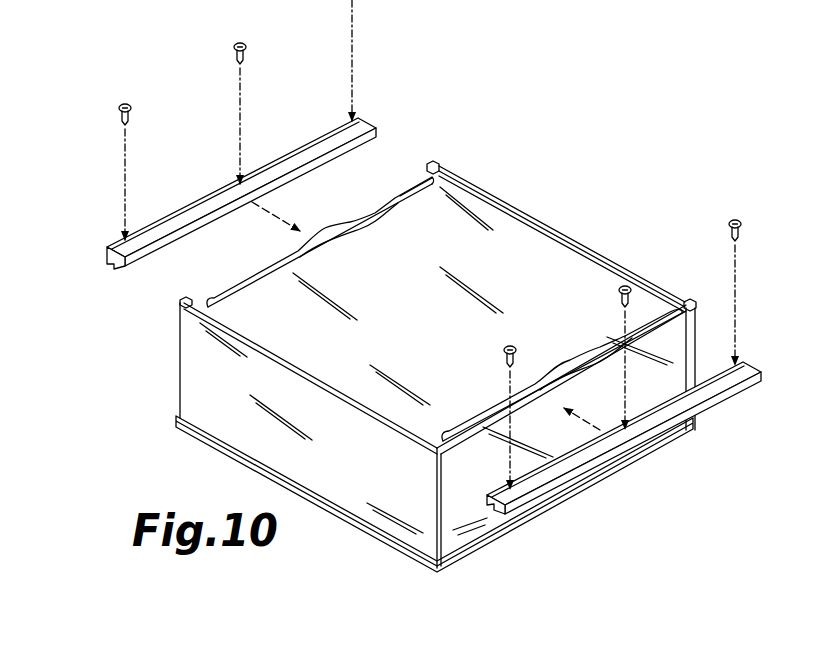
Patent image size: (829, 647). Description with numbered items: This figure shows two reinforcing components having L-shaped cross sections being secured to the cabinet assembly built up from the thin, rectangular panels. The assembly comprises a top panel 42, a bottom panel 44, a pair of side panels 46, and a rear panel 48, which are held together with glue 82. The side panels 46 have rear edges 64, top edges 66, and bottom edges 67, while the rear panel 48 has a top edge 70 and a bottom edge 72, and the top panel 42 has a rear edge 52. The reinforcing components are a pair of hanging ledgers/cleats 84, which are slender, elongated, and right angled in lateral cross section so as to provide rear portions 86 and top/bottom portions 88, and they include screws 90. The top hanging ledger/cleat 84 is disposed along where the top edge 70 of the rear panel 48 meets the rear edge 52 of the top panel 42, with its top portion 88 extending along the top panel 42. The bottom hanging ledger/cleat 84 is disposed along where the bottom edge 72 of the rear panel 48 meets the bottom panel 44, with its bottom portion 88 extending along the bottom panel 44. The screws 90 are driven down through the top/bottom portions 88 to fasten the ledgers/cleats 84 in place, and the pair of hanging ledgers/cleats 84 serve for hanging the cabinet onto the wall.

The top panel 42 is at (395, 186).
The bottom panel 44 is at (465, 477).
The side panels 46 is at (500, 189).
The rear panel 48 is at (558, 267).
The rear edge 52 is at (276, 259).
The rear edges 64 is at (283, 363).
The top edges 66 is at (428, 163).
The bottom edges 67 is at (497, 600).
The top edge 70 is at (326, 228).
The bottom edge 72 is at (605, 375).
The glue 82 is at (373, 226).
The hanging ledgers/cleats 84 is at (293, 150).
The rear portions 86 is at (217, 197).
The top/bottom portions 88 is at (107, 258).
The screws 90 is at (746, 224).